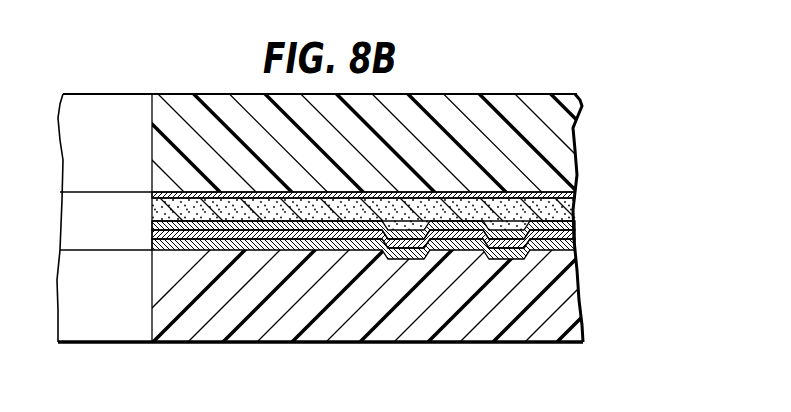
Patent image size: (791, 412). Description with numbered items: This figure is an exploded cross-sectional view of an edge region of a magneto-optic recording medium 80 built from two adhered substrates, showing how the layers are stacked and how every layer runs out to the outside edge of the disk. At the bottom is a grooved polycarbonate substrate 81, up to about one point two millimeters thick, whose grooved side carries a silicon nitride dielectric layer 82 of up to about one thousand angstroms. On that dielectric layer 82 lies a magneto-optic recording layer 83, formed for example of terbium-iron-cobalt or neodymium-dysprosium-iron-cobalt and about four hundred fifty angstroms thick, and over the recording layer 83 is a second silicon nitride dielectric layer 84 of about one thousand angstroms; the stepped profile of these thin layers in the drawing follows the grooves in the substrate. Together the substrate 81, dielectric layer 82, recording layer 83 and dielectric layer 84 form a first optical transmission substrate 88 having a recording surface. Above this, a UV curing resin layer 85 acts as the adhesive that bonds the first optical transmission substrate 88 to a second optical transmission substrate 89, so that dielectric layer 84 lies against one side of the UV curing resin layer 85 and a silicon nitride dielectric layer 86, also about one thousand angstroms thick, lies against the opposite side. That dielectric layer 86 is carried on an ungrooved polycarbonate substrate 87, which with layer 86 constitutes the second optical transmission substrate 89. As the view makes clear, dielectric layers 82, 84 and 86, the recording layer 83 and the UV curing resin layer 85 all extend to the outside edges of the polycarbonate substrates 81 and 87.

The magneto-optic recording medium 80 is at (392, 213).
The polycarbonate substrate 81 is at (387, 292).
The silicon nitride dielectric layer 82 is at (568, 246).
The magneto-optic recording layer 83 is at (570, 234).
The silicon nitride dielectric layer 84 is at (573, 224).
The UV curing resin layer 85 is at (568, 208).
The silicon nitride dielectric layer 86 is at (570, 193).
The ungrooved polycarbonate substrate 87 is at (563, 147).
The first optical transmission substrate 88 is at (420, 263).
The second optical transmission substrate 89 is at (386, 144).